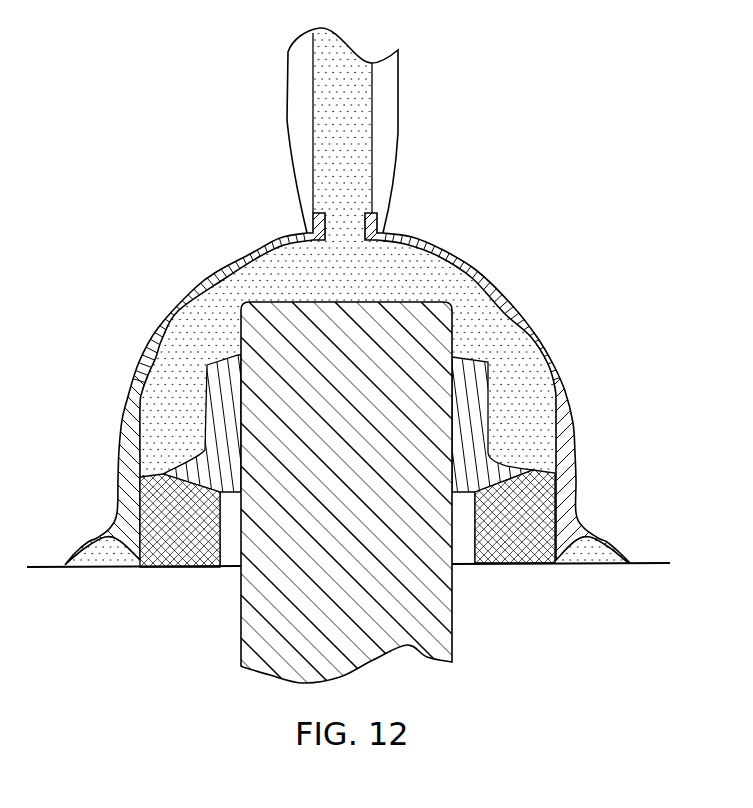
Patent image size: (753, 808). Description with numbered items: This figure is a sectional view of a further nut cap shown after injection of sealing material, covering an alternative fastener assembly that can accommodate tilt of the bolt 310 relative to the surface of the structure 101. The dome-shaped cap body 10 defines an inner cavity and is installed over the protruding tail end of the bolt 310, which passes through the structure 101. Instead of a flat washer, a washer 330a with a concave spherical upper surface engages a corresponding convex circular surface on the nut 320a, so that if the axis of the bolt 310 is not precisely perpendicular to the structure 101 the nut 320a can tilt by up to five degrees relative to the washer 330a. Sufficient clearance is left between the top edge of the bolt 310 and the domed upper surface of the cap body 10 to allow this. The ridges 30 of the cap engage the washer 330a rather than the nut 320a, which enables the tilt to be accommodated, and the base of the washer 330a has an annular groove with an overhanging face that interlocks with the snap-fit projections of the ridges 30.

The cap body 10 is at (520, 310).
The ridges 30 is at (556, 438).
The structure 101 is at (650, 560).
The bolt 310 is at (243, 632).
The nut 320a is at (207, 450).
The washer 330a is at (171, 569).